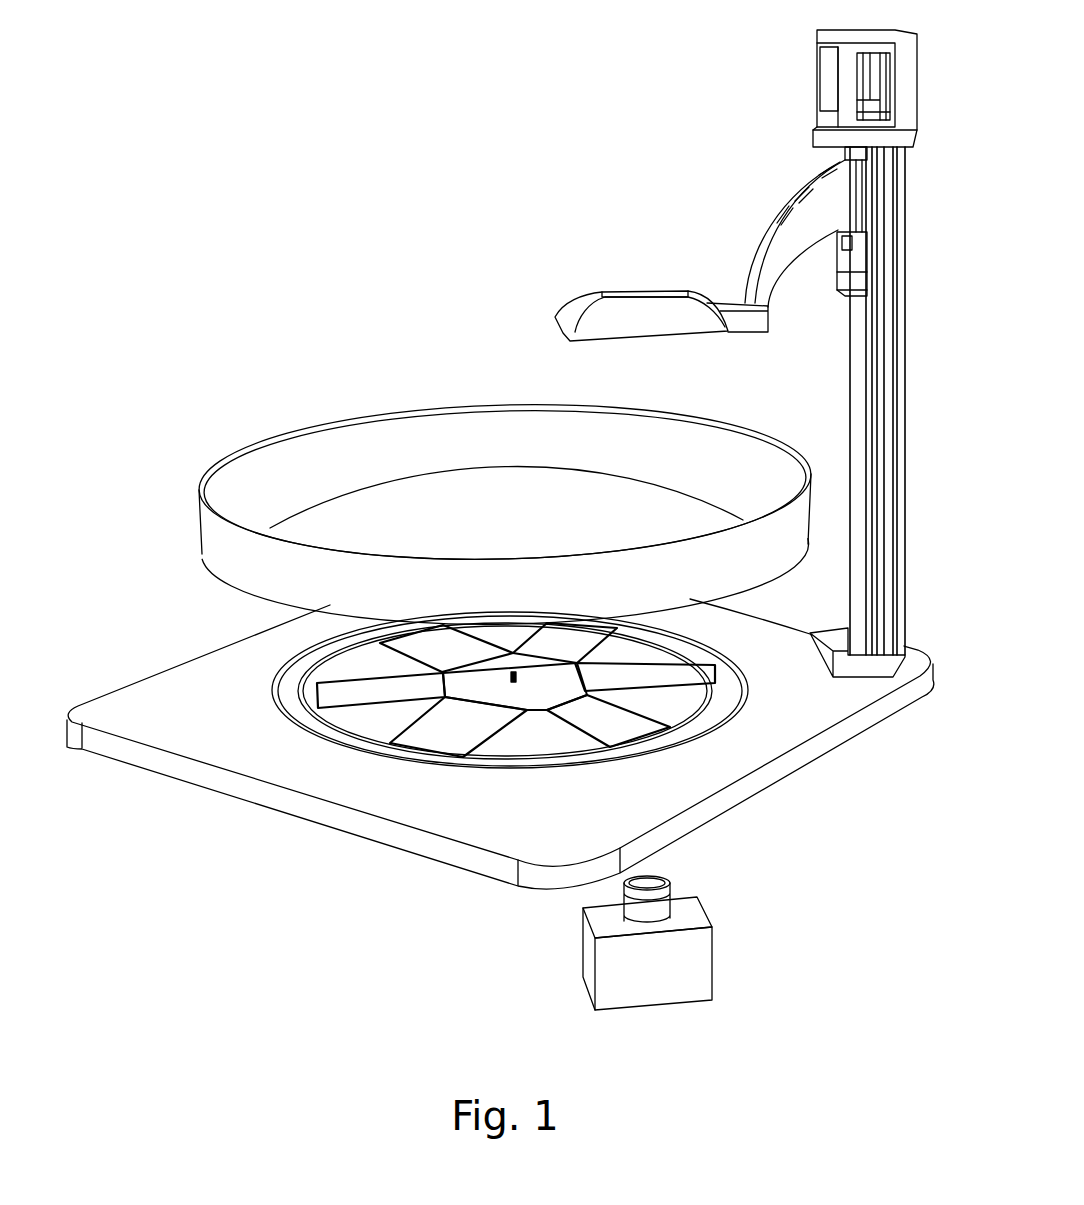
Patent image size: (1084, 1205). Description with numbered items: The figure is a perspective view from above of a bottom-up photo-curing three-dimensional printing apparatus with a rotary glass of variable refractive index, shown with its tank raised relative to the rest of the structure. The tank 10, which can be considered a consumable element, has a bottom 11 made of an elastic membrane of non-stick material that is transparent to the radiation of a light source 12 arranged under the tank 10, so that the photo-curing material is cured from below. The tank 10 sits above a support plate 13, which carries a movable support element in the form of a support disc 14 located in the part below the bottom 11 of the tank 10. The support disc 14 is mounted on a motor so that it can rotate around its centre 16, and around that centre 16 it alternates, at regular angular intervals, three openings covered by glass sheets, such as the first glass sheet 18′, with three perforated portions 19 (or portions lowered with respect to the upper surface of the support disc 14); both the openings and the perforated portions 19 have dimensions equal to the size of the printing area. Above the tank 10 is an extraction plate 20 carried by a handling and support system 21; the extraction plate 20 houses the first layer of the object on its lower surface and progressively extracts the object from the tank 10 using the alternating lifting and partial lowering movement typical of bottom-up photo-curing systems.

The tank 10 is at (247, 476).
The bottom 11 is at (463, 502).
The light source 12 is at (690, 958).
The support plate 13 is at (223, 753).
The support disc 14 is at (688, 700).
The centre 16 is at (513, 680).
The first glass sheet 18′ is at (685, 663).
The perforated portions 19 is at (572, 645).
The extraction plate 20 is at (595, 340).
The handling and support system 21 is at (758, 177).